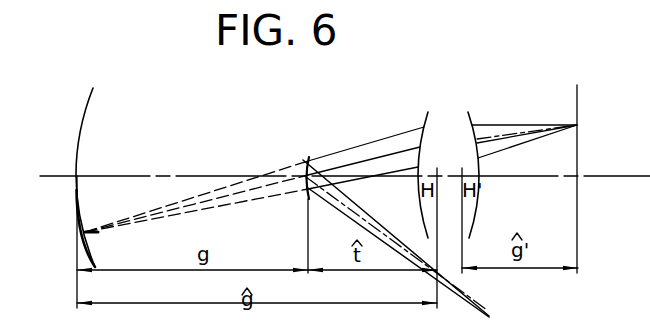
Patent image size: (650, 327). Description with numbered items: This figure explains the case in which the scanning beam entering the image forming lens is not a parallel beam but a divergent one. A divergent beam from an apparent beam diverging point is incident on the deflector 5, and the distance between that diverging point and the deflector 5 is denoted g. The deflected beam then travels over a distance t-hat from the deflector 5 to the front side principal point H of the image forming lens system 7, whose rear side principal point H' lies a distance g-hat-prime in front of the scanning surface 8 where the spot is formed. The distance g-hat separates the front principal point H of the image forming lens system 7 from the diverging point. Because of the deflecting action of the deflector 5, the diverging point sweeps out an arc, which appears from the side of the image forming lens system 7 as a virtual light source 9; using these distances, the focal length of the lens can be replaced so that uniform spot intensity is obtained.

The deflector 5 is at (311, 158).
The image forming lens system 7 is at (449, 121).
The scanning surface 8 is at (577, 89).
The virtual light source 9 is at (93, 89).